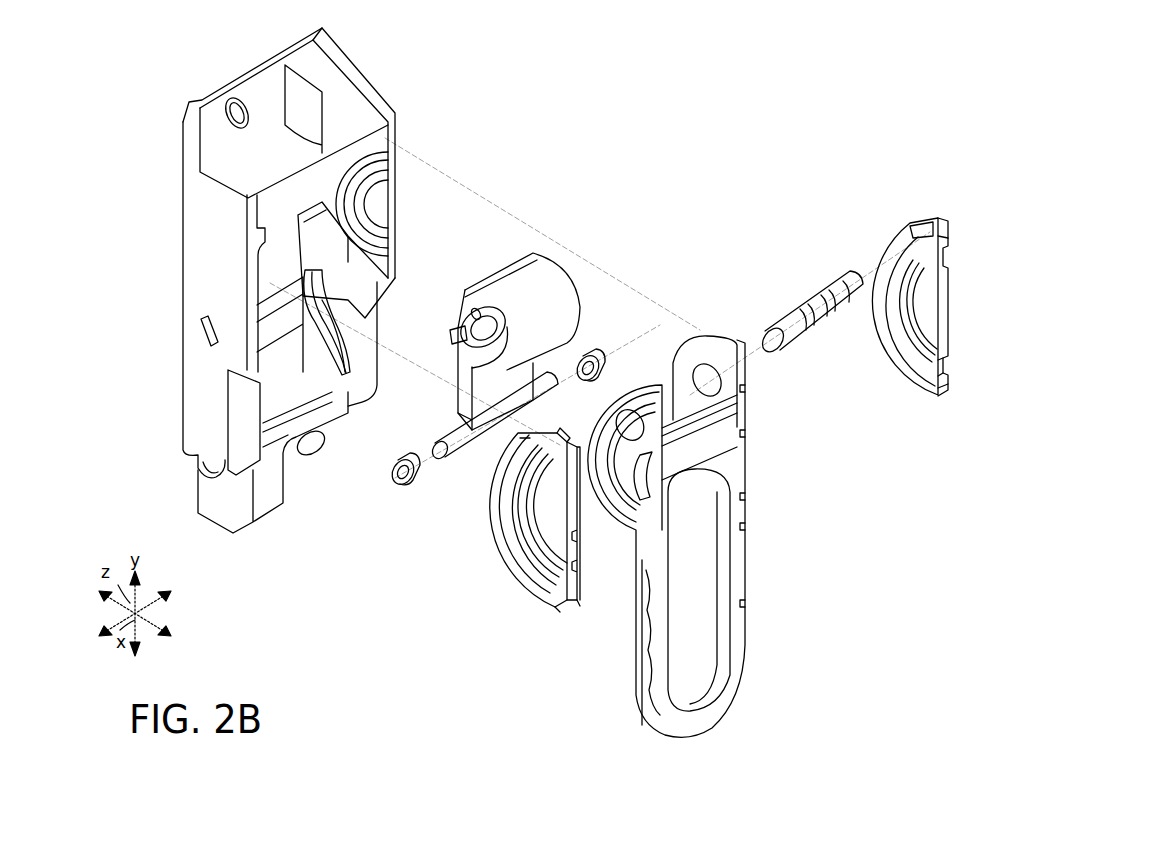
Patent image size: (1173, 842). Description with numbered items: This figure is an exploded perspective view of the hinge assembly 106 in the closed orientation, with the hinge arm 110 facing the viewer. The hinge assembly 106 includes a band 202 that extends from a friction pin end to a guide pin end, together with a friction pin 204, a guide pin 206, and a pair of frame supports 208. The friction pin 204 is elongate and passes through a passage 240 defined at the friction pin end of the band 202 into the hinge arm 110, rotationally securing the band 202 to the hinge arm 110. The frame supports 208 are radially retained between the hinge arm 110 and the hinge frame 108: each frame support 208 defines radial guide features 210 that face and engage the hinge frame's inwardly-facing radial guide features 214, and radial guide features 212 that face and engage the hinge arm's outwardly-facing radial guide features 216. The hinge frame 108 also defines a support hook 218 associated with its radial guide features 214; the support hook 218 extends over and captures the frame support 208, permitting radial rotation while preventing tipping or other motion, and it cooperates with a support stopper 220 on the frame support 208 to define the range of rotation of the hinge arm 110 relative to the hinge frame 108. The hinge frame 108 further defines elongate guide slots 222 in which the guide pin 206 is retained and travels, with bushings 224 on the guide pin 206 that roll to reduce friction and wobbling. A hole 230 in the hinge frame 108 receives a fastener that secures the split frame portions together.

The hinge assembly 106 is at (570, 388).
The hinge frame 108 is at (359, 280).
The hinge arm 110 is at (738, 536).
The band 202 is at (571, 317).
The friction pin 204 is at (805, 300).
The guide pin 206 is at (437, 458).
The frame support 208 is at (634, 391).
The radial guide feature 210 is at (685, 520).
The radial guide feature 212 is at (707, 502).
The radial guide feature 214 is at (338, 237).
The radial guide feature 216 is at (734, 338).
The support hook 218 is at (440, 290).
The support stopper 220 is at (701, 314).
The guide slot 222 is at (382, 367).
The bushing 224 is at (489, 409).
The hole 230 is at (156, 486).
The passage 240 is at (462, 336).